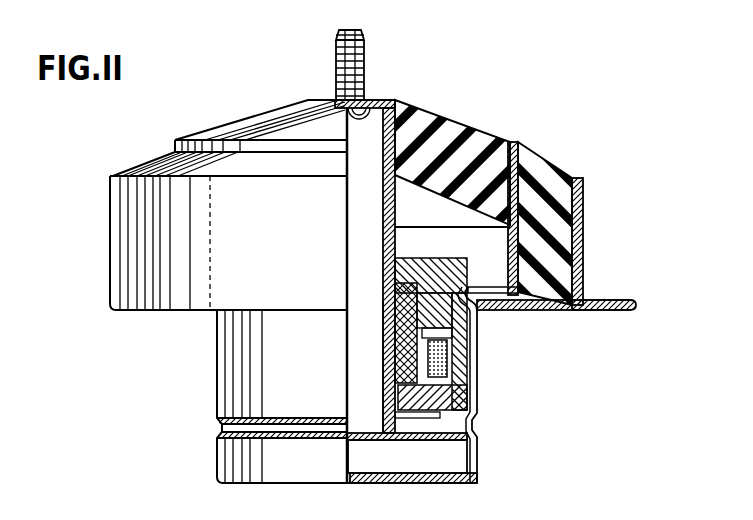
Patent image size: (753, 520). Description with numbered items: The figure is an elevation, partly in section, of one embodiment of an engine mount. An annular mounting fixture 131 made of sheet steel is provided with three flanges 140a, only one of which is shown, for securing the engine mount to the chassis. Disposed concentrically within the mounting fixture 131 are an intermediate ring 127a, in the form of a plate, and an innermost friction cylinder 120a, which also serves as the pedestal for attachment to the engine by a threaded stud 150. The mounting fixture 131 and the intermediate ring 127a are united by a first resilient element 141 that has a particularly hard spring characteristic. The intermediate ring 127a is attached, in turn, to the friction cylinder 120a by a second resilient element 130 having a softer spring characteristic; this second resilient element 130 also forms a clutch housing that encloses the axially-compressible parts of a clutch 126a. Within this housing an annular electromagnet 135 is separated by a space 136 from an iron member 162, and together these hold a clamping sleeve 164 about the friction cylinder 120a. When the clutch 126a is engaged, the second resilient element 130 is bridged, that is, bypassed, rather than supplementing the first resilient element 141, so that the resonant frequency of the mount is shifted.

The threaded stud 150 is at (365, 52).
The friction cylinder 120a is at (374, 102).
The second resilient element 130 is at (453, 122).
The first resilient element 141 is at (533, 160).
The annular mounting fixture 131 is at (586, 226).
The flange 140a is at (622, 300).
The intermediate ring 127a is at (500, 293).
The space 136 is at (477, 332).
The annular electromagnet 135 is at (450, 364).
The iron member 162 is at (432, 258).
The clutch 126a is at (378, 344).
The clamping sleeve 164 is at (395, 382).